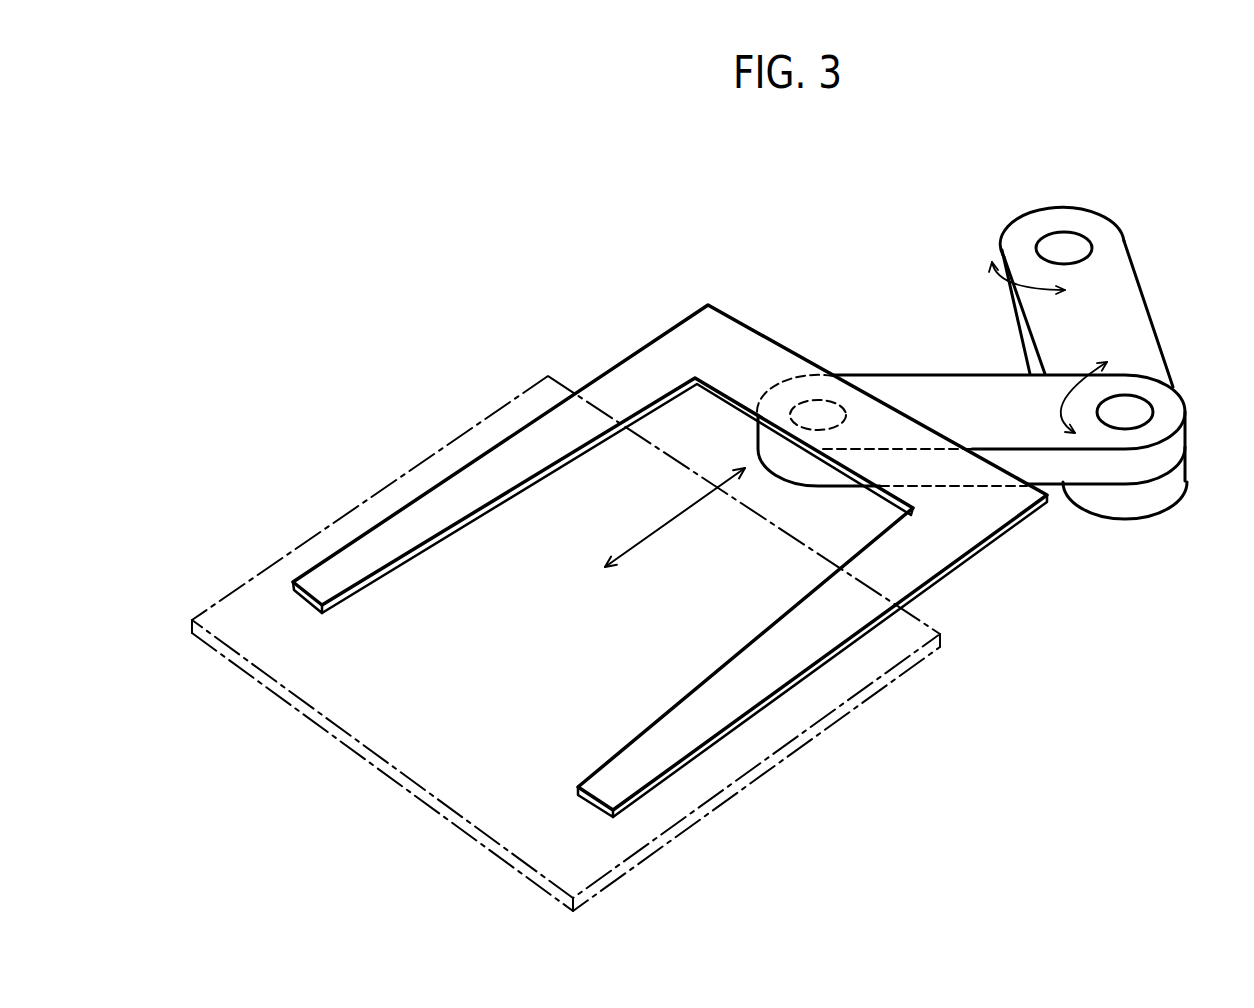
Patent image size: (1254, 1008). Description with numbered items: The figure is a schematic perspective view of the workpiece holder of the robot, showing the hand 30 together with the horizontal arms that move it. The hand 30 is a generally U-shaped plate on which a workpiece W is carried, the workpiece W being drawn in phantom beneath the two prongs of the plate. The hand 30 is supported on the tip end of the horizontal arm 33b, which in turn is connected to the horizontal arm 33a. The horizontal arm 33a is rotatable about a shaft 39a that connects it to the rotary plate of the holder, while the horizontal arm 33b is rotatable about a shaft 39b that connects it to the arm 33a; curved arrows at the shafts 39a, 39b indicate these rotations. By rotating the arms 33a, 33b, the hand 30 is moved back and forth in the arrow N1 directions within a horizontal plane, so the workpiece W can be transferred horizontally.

The workpiece W is at (472, 442).
The hand 30 is at (690, 330).
The horizontal arm 33a is at (1123, 302).
The horizontal arm 33b is at (938, 383).
The shaft 39a is at (1075, 243).
The shaft 39b is at (1135, 410).
The arrow directions N1 is at (675, 517).